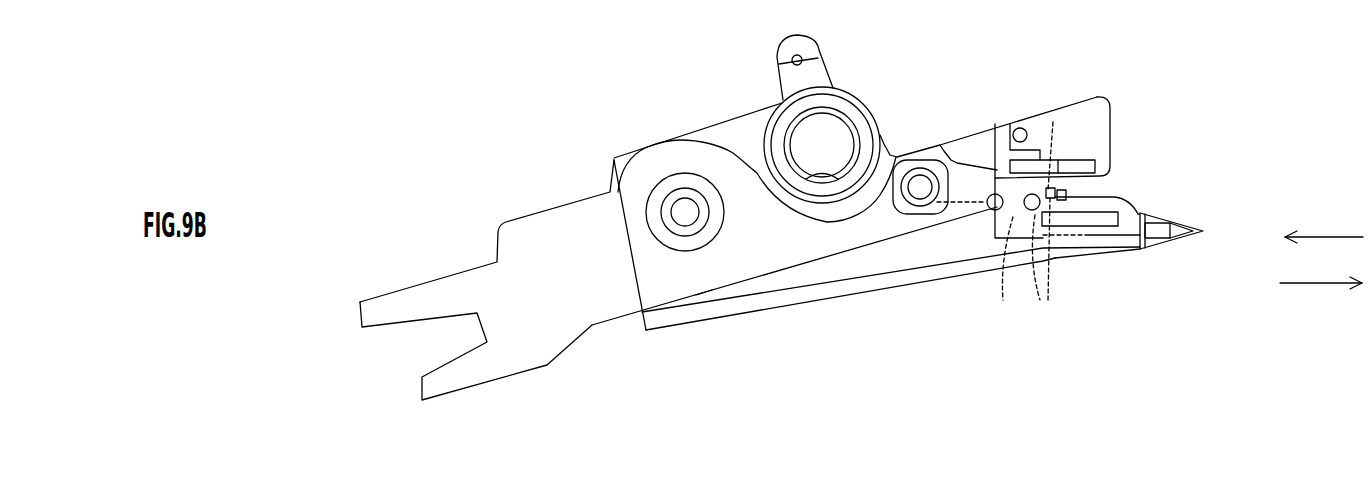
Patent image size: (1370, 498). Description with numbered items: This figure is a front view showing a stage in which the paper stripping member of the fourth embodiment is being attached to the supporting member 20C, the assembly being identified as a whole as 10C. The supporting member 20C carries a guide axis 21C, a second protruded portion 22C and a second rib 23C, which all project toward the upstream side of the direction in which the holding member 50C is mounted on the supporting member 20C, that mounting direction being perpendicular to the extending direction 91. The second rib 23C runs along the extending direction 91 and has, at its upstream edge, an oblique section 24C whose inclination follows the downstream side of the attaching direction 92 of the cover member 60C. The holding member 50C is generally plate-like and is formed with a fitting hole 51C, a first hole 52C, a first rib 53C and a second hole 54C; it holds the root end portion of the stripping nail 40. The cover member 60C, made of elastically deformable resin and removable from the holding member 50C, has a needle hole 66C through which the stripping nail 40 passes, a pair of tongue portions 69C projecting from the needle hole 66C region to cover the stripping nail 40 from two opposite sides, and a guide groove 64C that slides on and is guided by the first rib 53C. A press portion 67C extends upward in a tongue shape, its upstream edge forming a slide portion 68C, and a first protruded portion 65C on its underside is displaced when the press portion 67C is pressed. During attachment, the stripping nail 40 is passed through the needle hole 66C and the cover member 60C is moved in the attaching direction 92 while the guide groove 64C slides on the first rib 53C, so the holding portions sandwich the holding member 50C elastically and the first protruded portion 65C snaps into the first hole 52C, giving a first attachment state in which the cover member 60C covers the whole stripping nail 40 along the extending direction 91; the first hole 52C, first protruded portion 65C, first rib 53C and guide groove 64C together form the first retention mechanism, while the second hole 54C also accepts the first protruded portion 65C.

The liquid ejecting head / holder body 10C is at (663, 324).
The supporting member 20C is at (500, 232).
The guide axis 21C is at (678, 197).
The second protruded portion 22C is at (1030, 134).
The second rib 23C is at (1092, 167).
The oblique section 24C is at (1055, 145).
The stripping nail 40 is at (1180, 228).
The holding member 50C is at (828, 290).
The fitting hole 51C is at (703, 253).
The first hole 52C is at (1032, 212).
The first rib 53C is at (1098, 232).
The second hole 54C is at (994, 211).
The cover member 60C is at (1133, 258).
The guide groove 64C is at (1062, 202).
The first protruded portion 65C is at (1050, 200).
The needle hole 66C is at (1150, 217).
The press portion 67C is at (1008, 124).
The slide portion 68C is at (1053, 122).
The tongue portions 69C is at (1183, 243).
The extending direction 91 is at (1321, 274).
The attaching direction 92 is at (1324, 227).